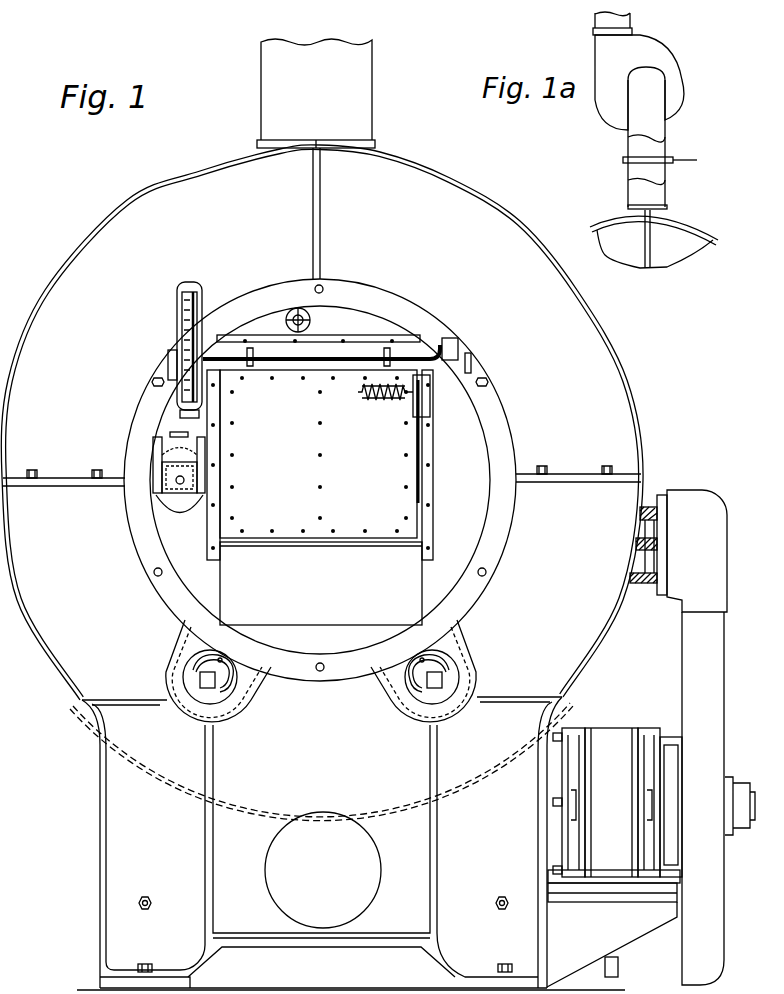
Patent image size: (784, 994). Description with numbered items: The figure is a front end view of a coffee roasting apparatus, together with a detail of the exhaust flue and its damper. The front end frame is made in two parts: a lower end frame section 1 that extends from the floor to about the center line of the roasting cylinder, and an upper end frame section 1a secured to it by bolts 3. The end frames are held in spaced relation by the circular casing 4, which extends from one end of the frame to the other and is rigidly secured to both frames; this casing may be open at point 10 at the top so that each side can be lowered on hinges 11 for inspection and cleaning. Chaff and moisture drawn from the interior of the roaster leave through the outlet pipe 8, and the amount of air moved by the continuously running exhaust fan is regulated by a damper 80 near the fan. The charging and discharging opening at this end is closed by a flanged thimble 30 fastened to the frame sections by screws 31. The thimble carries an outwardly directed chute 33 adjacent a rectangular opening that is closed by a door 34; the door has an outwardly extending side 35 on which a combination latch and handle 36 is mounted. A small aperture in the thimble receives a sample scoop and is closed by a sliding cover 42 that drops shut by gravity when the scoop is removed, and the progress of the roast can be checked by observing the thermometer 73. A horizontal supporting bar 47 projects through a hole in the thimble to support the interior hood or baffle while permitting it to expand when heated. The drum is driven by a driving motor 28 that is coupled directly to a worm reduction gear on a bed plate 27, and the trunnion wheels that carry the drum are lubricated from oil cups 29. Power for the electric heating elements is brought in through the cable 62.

In FIG. 1, the lower end frame section 1 is at (100, 848).
In FIG. 1, the upper end frame section 1a is at (262, 236).
In FIG. 1A, the upper end frame section 1a is at (700, 252).
In FIG. 1, the bolts 3 is at (602, 466).
In FIG. 1, the circular casing 4 is at (102, 238).
In FIG. 1, the outlet pipe 8 is at (261, 90).
In FIG. 1A, the outlet pipe 8 is at (627, 190).
In FIG. 1, the opening point 10 is at (316, 140).
In FIG. 1, the hinges 11 is at (110, 748).
In FIG. 1, the bed plate 27 is at (637, 942).
In FIG. 1, the driving motor 28 is at (610, 740).
In FIG. 1, the oil cups 29 is at (214, 690).
In FIG. 1, the flanged thimble 30 is at (416, 312).
In FIG. 1, the screws 31 is at (323, 288).
In FIG. 1, the chute 33 is at (321, 583).
In FIG. 1, the door 34 is at (337, 447).
In FIG. 1, the outwardly extending side 35 is at (428, 447).
In FIG. 1, the combination latch and handle 36 is at (380, 401).
In FIG. 1, the sliding cover 42 is at (160, 438).
In FIG. 1, the horizontal supporting bar 47 is at (290, 312).
In FIG. 1, the cable 62 is at (639, 513).
In FIG. 1, the thermometer 73 is at (177, 326).
In FIG. 1A, the damper 80 is at (690, 160).